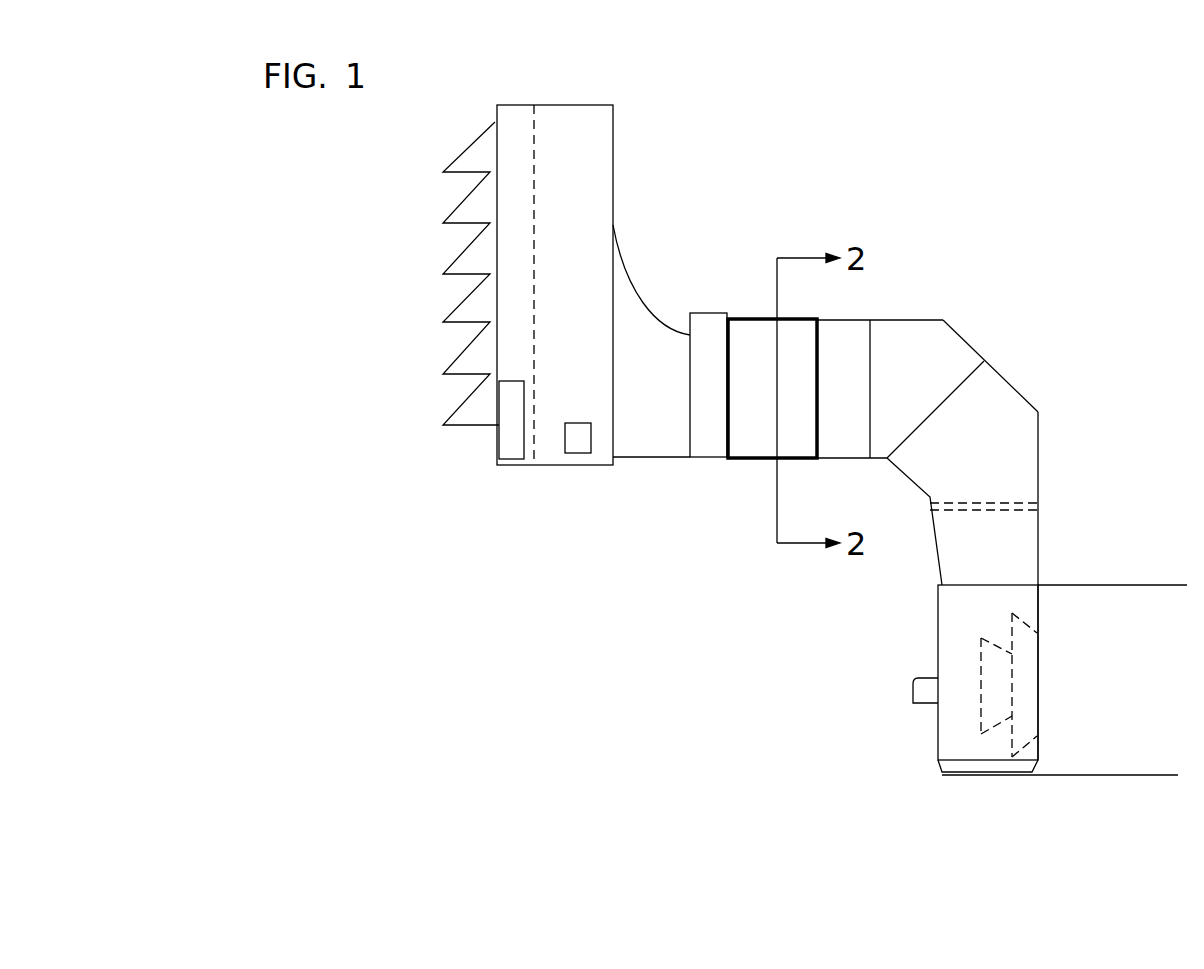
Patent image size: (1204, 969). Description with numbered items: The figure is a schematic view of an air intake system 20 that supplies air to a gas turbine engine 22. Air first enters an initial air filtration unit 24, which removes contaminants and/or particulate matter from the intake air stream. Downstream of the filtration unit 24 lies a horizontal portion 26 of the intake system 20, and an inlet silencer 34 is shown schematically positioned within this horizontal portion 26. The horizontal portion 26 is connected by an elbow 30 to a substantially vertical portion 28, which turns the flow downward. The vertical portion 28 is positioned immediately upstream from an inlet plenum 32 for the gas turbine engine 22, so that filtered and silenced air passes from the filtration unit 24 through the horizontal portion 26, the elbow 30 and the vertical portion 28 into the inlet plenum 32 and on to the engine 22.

The air intake system 20 is at (940, 255).
The gas turbine engine 22 is at (1130, 776).
The initial air filtration unit 24 is at (567, 98).
The horizontal portion 26 is at (712, 458).
The vertical portion 28 is at (1038, 478).
The elbow 30 is at (996, 352).
The inlet plenum 32 is at (1046, 607).
The inlet silencer 34 is at (759, 466).